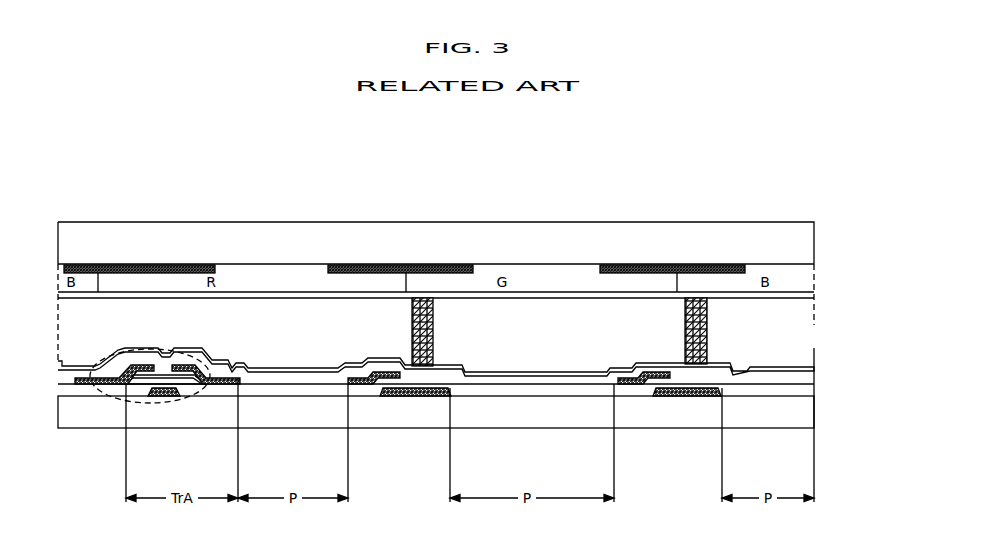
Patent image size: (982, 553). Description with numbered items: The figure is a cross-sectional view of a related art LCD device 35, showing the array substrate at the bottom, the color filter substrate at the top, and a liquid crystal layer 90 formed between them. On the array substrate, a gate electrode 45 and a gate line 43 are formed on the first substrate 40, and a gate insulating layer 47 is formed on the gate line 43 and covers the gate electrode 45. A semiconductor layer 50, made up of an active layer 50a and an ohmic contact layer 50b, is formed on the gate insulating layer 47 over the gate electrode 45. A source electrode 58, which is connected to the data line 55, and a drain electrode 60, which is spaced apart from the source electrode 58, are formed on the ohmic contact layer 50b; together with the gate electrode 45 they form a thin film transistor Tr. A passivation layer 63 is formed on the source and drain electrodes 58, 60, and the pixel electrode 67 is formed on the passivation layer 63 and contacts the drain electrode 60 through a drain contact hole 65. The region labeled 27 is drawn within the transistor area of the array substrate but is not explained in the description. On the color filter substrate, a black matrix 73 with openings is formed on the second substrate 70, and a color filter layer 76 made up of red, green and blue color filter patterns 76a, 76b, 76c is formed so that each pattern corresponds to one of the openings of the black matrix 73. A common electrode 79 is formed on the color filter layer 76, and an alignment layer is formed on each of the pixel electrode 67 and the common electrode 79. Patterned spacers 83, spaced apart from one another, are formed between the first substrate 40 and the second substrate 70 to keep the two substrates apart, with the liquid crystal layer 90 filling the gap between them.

The LCD device 35 is at (764, 147).
The first substrate 40 is at (66, 419).
The gate line 43 is at (412, 397).
The gate electrode 45 is at (163, 396).
The gate insulating layer 47 is at (272, 393).
The semiconductor layer 50 is at (225, 453).
The active layer 50a is at (205, 382).
The ohmic contact layer 50b is at (210, 385).
The data line 55 is at (93, 384).
The source electrode 58 is at (141, 380).
The drain electrode 60 is at (204, 380).
The passivation layer 63 is at (349, 377).
The drain contact hole 65 is at (237, 354).
The pixel electrode 67 is at (272, 366).
The thin film transistor region 27 is at (186, 352).
The second substrate 70 is at (69, 249).
The black matrix 73 is at (108, 264).
The color filter layer 76 is at (748, 196).
The red color filter pattern 76a is at (320, 278).
The green color filter pattern 76b is at (530, 280).
The blue color filter pattern 76c is at (785, 278).
The common electrode 79 is at (247, 295).
The patterned spacers 83 is at (436, 333).
The liquid crystal layer 90 is at (808, 338).
The thin film transistor Tr is at (104, 368).